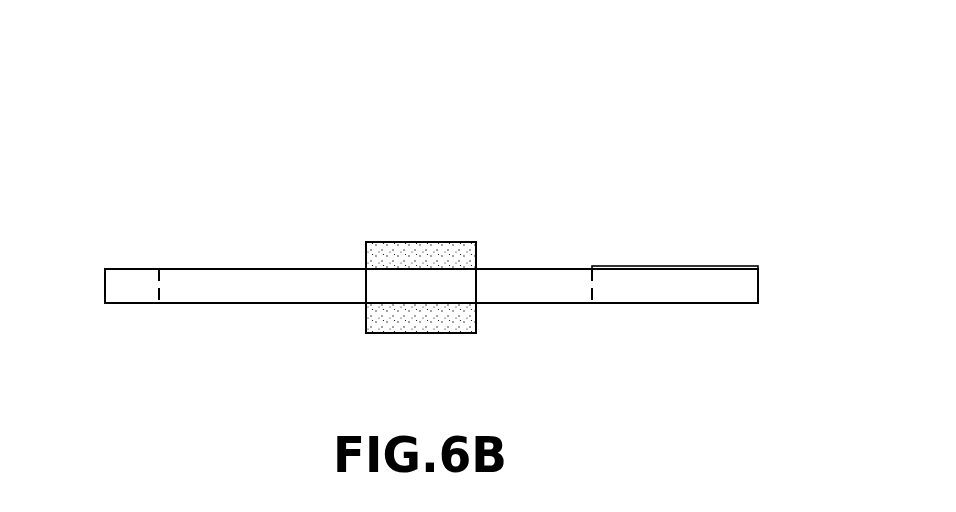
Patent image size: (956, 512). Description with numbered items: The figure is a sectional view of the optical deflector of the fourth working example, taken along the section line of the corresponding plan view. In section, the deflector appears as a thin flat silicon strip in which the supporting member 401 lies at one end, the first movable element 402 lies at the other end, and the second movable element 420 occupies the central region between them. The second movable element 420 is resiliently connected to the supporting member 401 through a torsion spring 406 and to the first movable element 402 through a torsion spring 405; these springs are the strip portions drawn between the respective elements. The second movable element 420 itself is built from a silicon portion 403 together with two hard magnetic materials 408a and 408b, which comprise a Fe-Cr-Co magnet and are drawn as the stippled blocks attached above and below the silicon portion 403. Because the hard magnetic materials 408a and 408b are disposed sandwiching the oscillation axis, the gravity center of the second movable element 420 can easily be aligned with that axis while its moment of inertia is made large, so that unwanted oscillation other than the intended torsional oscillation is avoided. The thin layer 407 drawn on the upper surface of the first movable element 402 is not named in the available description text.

The supporting member 401 is at (143, 290).
The first movable element 402 is at (697, 295).
The silicon portion 403 is at (452, 278).
The torsion spring 405 is at (533, 294).
The torsion spring 406 is at (215, 290).
The thin conductive layer 407 is at (725, 267).
The hard magnetic material 408a is at (393, 312).
The hard magnetic material 408b is at (420, 250).
The second movable element 420 is at (522, 131).